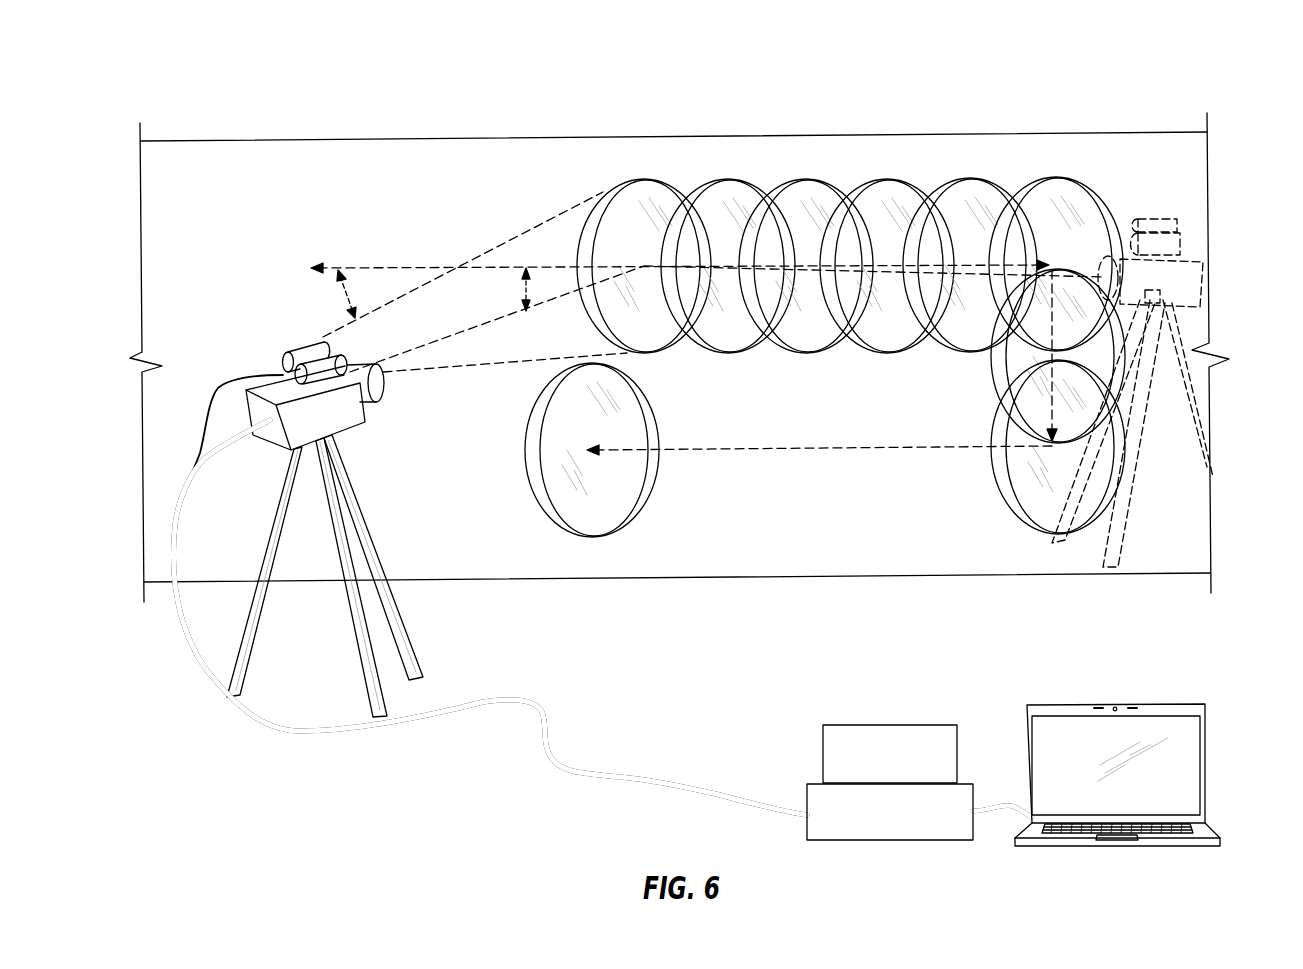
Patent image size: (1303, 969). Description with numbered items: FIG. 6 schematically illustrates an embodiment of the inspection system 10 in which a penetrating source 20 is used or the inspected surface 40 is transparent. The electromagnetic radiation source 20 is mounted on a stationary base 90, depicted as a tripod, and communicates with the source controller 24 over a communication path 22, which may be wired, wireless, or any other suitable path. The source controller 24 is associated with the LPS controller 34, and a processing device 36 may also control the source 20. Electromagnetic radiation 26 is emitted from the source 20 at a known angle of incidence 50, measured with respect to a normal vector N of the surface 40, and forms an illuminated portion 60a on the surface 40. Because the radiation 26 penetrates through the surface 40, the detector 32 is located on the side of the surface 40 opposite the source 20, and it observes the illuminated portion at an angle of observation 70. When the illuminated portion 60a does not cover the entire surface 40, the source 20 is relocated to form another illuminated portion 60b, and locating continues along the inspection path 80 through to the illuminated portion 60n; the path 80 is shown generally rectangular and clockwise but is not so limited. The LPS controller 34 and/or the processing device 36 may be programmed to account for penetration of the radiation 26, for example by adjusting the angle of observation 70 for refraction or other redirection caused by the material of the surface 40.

The inspection system 10 is at (153, 101).
The electromagnetic radiation source 20 is at (300, 343).
The communication path 22 is at (550, 733).
The source controller 24 is at (823, 757).
The electromagnetic radiation 26 is at (543, 251).
The detector 32 is at (337, 422).
The LPS controller 34 is at (807, 797).
The processing device 36 is at (1205, 763).
The inspected surface 40 is at (845, 552).
The angle of incidence 50 is at (347, 294).
The illuminated portion 60a is at (644, 178).
The illuminated portion 60b is at (728, 178).
The illuminated portion 60n is at (548, 450).
The angle of observation 70 is at (522, 288).
The inspection path 80 is at (840, 446).
The stationary base 90 is at (408, 628).